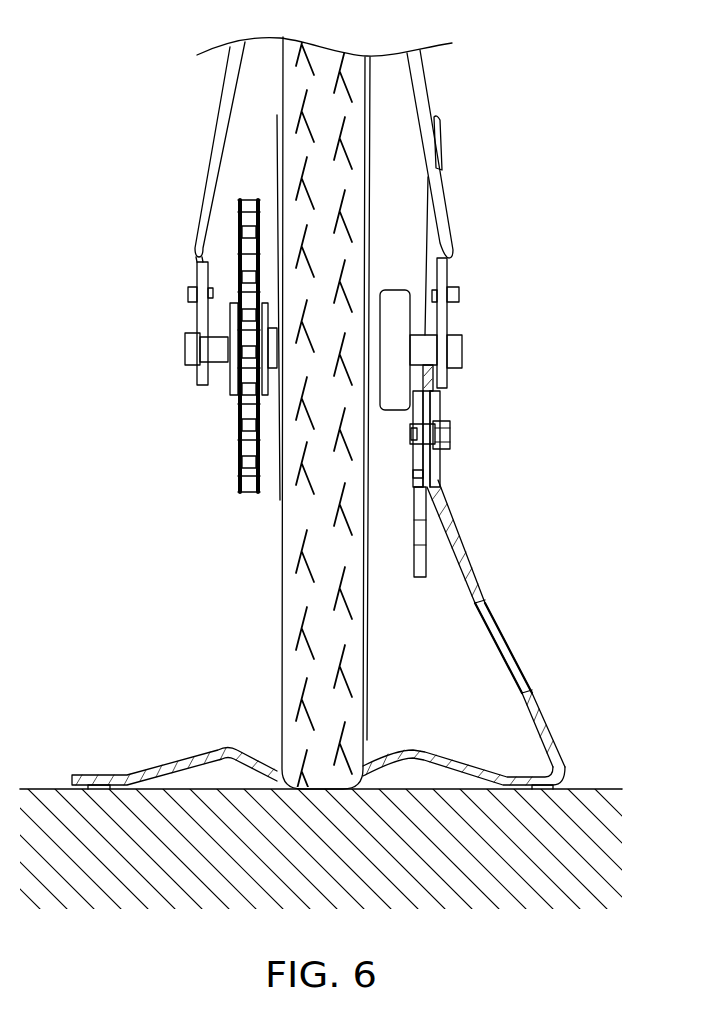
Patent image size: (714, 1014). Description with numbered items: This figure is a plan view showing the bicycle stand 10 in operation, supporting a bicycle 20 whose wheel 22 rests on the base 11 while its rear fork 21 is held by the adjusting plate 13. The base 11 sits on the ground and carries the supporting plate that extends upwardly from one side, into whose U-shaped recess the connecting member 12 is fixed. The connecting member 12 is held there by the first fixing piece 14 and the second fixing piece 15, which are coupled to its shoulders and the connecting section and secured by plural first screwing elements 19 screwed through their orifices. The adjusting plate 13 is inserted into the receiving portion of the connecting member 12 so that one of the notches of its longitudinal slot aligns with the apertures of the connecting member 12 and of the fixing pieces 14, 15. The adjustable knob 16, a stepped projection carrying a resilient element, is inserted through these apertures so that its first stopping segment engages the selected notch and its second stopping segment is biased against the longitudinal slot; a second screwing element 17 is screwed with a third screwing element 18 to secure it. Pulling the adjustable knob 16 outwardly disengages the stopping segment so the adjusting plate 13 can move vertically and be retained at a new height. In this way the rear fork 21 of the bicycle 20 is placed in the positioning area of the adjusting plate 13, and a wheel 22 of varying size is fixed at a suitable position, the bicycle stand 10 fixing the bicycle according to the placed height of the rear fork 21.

The bicycle stand 10 is at (341, 634).
The base 11 is at (552, 695).
The connecting member 12 is at (418, 493).
The adjusting plate 13 is at (434, 388).
The first fixing piece 14 is at (436, 465).
The second fixing piece 15 is at (416, 477).
The adjustable knob 16 is at (449, 450).
The second screwing element 17 is at (451, 437).
The third screwing element 18 is at (417, 427).
The first screwing elements 19 is at (441, 413).
The bicycle 20 is at (146, 266).
The rear fork 21 is at (416, 349).
The wheel 22 is at (324, 592).